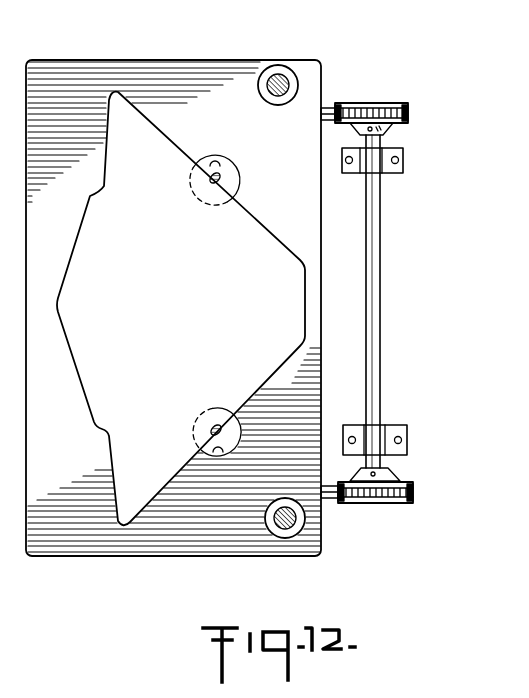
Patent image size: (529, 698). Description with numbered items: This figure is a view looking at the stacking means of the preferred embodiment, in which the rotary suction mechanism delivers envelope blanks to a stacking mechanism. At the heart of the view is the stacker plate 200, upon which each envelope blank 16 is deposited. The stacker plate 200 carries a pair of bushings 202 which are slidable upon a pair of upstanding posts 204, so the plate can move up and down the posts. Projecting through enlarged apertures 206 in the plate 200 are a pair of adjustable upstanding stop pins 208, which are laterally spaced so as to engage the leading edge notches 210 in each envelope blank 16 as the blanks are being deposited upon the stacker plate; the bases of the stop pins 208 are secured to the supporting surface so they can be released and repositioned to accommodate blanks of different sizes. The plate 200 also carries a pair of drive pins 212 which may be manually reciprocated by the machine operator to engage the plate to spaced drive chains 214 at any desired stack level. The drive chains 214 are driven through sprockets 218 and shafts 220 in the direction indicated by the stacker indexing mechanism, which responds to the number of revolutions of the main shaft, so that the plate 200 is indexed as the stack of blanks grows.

The envelope blank 16 is at (161, 305).
The stacker plate 200 is at (118, 548).
The bushings 202 is at (297, 73).
The upstanding posts 204 is at (277, 73).
The enlarged apertures 206 is at (213, 157).
The stop pins 208 is at (221, 177).
The leading edge notches 210 is at (205, 196).
The drive pins 212 is at (326, 125).
The drive chains 214 is at (410, 113).
The sprockets 218 is at (370, 105).
The shafts 220 is at (382, 298).